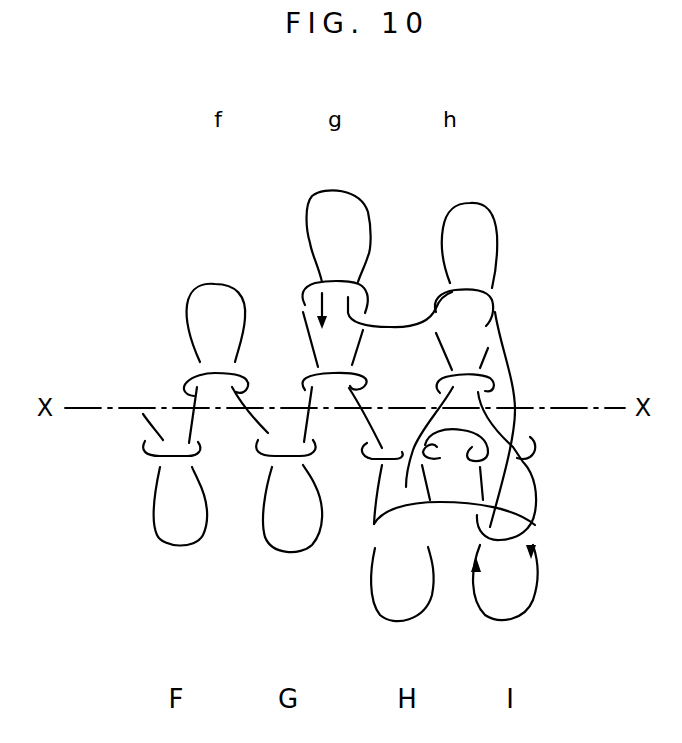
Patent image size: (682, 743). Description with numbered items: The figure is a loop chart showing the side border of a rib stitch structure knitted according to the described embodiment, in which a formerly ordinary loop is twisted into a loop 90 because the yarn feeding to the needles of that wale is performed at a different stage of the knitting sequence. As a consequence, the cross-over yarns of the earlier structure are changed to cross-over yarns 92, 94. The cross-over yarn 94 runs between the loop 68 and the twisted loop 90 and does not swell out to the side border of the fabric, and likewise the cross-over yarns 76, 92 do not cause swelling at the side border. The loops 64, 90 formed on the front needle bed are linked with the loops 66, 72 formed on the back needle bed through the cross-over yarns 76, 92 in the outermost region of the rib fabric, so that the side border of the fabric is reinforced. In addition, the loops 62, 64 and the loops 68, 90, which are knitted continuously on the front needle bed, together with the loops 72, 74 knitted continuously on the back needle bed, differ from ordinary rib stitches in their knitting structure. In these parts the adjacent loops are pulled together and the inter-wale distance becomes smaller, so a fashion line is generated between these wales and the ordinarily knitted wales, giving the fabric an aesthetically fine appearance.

The loop 74 is at (358, 195).
The loop 72 is at (483, 207).
The loop 66 is at (495, 310).
The cross-over yarn 76 is at (482, 403).
The cross-over yarn 92 is at (517, 418).
The loop 64 is at (537, 515).
The loop 62 is at (373, 523).
The cross-over yarn 94 is at (458, 505).
The loop 68 is at (383, 620).
The loop 90 is at (527, 617).